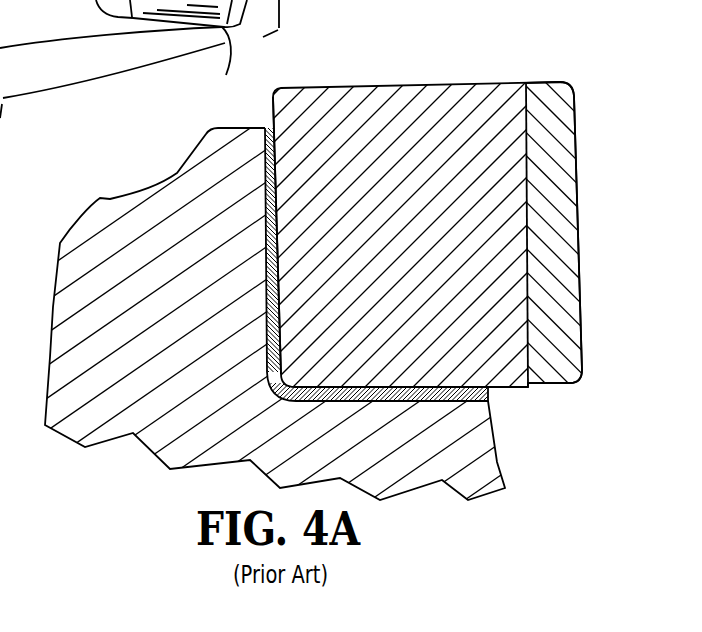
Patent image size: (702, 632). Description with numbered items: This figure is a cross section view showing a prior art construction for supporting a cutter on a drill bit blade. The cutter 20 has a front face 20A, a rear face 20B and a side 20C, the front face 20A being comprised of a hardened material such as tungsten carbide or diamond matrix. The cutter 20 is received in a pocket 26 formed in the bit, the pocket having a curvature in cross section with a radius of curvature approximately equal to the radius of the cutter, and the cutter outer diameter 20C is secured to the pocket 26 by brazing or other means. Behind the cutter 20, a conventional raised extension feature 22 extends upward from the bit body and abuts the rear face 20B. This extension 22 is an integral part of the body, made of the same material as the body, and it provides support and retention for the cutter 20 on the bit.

The cutter 20 is at (351, 199).
The front face 20A is at (583, 233).
The rear face 20B is at (278, 241).
The side 20C is at (397, 386).
The raised extension feature 22 is at (101, 200).
The pocket 26 is at (382, 402).